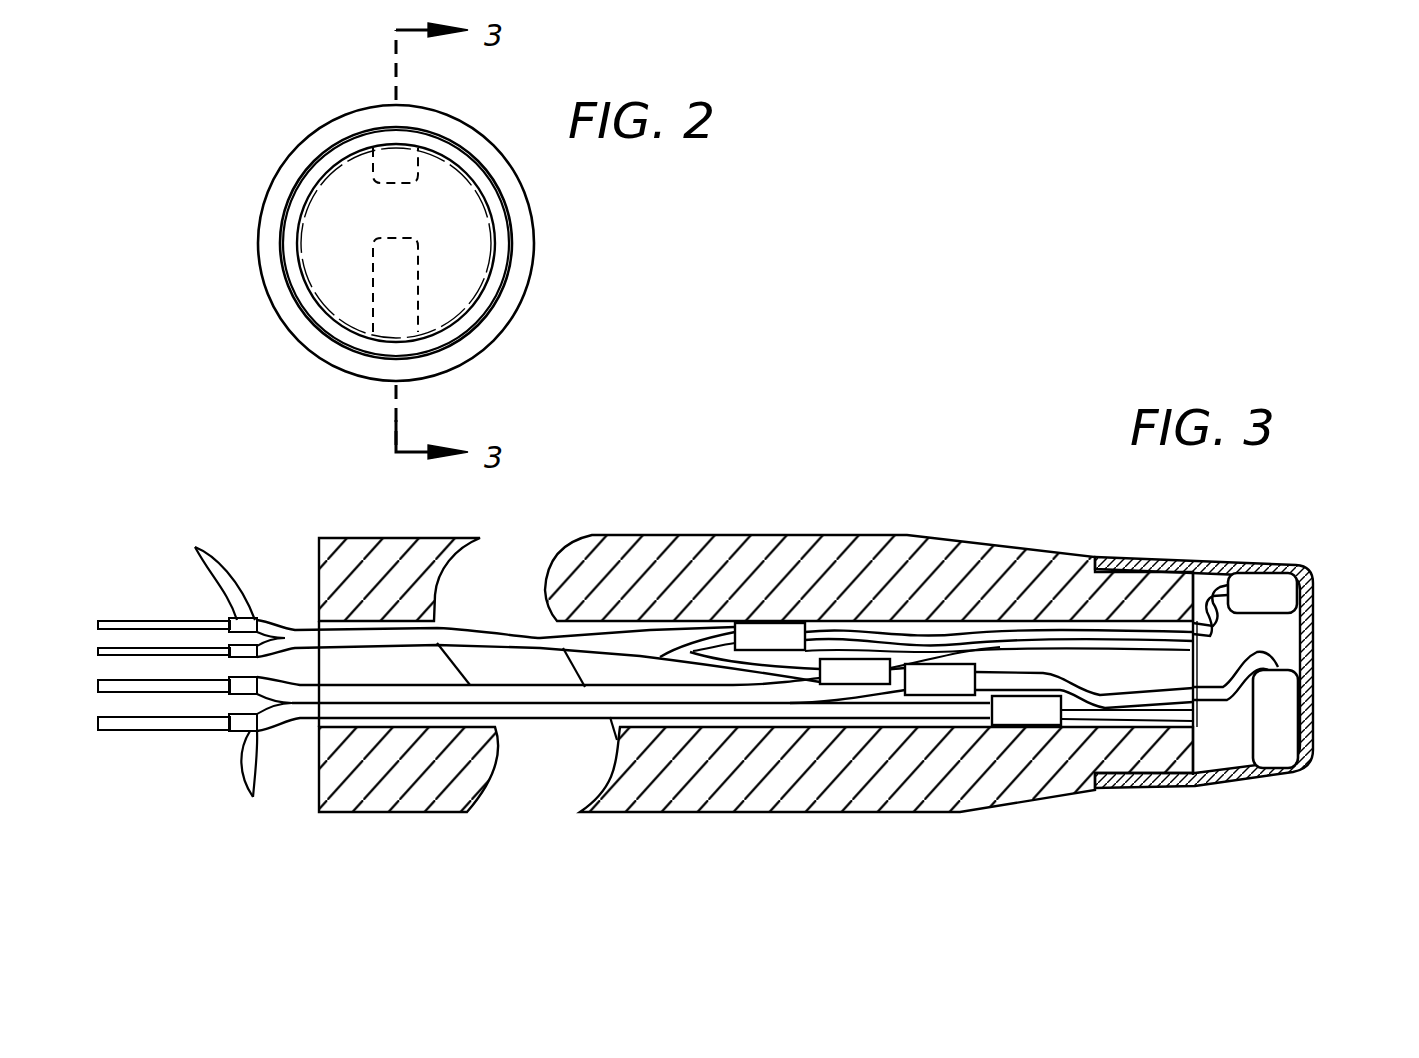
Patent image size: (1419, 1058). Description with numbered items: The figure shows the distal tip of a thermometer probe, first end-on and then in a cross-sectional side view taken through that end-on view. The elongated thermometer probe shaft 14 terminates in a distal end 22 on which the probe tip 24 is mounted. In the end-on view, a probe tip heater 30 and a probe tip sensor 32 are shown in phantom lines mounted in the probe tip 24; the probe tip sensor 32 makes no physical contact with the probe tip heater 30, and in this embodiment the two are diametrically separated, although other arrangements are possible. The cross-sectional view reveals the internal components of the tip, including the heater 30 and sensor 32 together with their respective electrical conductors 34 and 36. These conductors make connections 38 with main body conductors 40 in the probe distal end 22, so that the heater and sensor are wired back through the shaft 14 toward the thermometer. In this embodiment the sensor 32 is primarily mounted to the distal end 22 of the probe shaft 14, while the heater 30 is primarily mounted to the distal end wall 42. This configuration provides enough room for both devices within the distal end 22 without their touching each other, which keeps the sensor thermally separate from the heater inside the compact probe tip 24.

In FIG. 3, the thermometer probe shaft 14 is at (423, 815).
In FIG. 2, the distal end 22 is at (323, 130).
In FIG. 3, the distal end 22 is at (724, 813).
In FIG. 2, the probe tip 24 is at (338, 220).
In FIG. 3, the probe tip 24 is at (1318, 700).
In FIG. 2, the probe tip heater 30 is at (403, 168).
In FIG. 3, the probe tip heater 30 is at (1272, 583).
In FIG. 2, the probe tip sensor 32 is at (400, 295).
In FIG. 3, the probe tip sensor 32 is at (1273, 748).
In FIG. 3, the electrical conductor 34 is at (1005, 620).
In FIG. 3, the electrical conductor 36 is at (1205, 788).
In FIG. 3, the connections 38 is at (767, 633).
In FIG. 3, the main body conductors 40 is at (230, 672).
In FIG. 3, the distal end wall 42 is at (1193, 575).